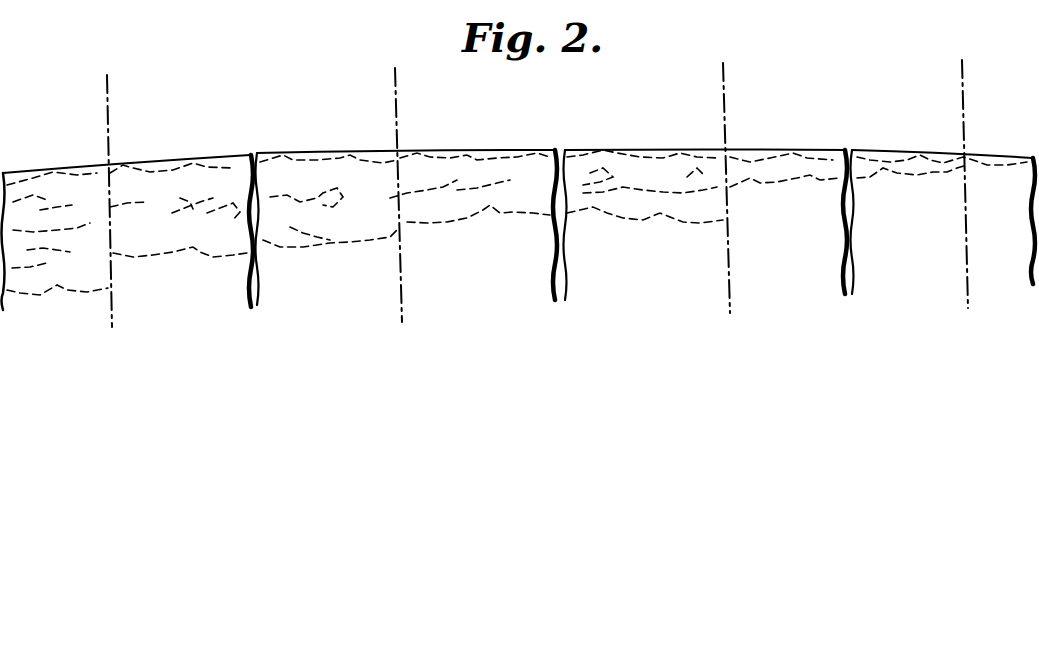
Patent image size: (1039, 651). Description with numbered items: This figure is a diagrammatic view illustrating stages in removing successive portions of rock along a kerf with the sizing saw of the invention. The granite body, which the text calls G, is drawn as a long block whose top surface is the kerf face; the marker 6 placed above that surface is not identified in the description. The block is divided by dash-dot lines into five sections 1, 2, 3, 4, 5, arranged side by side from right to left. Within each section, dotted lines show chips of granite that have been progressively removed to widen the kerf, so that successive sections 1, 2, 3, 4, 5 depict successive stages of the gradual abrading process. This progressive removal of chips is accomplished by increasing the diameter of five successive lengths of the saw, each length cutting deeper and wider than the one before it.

The section 1 is at (946, 170).
The section 2 is at (881, 184).
The section 3 is at (560, 188).
The section 4 is at (333, 195).
The section 5 is at (126, 200).
The upper surface 6 is at (628, 149).